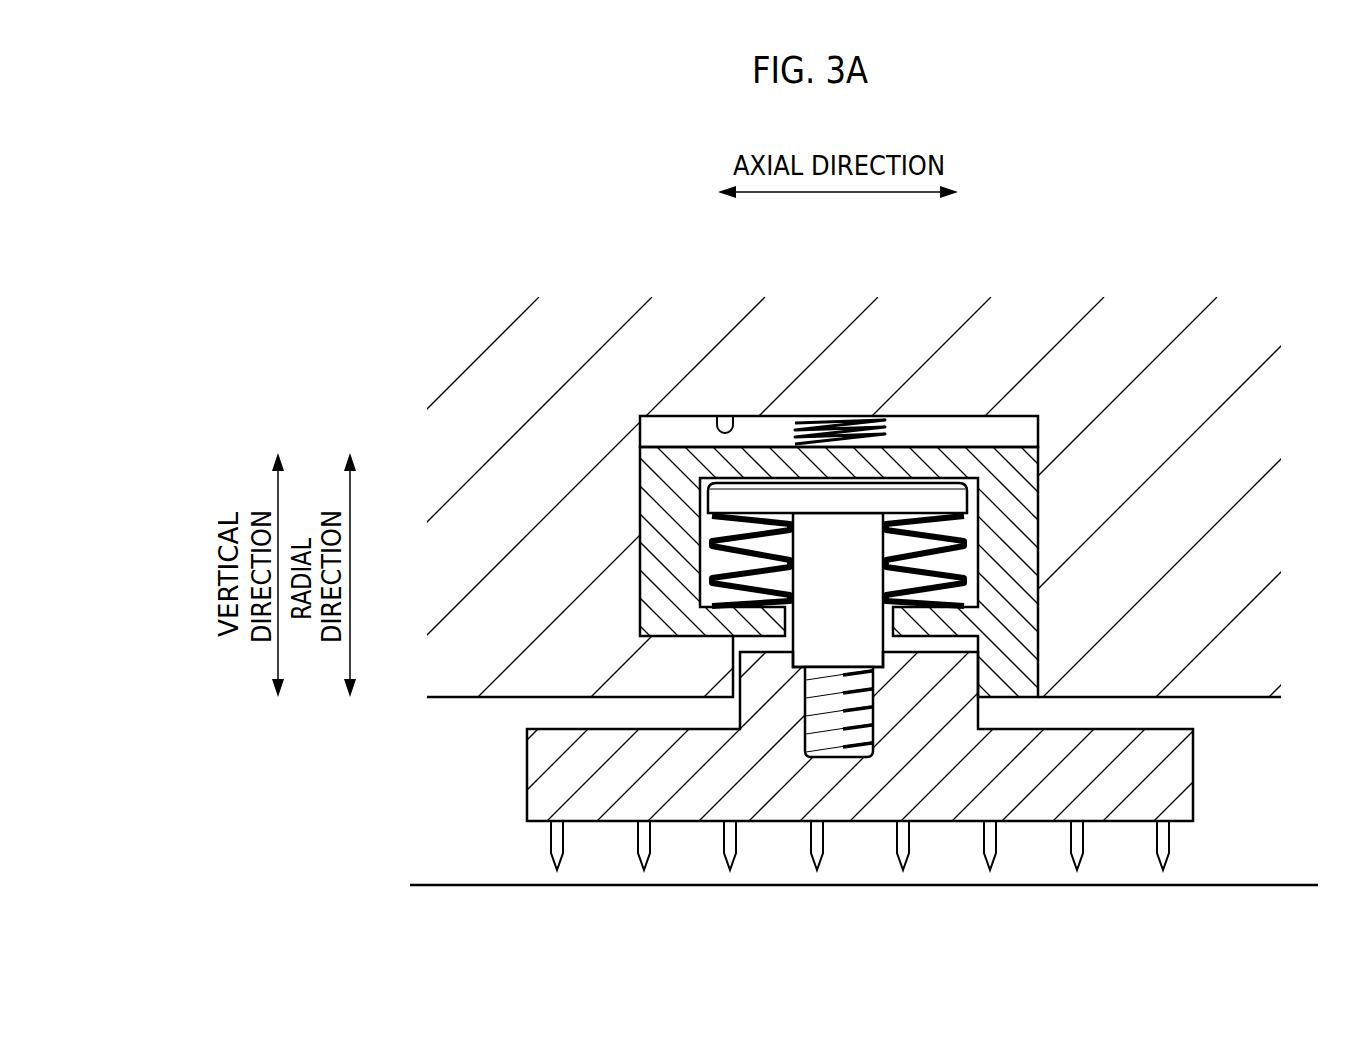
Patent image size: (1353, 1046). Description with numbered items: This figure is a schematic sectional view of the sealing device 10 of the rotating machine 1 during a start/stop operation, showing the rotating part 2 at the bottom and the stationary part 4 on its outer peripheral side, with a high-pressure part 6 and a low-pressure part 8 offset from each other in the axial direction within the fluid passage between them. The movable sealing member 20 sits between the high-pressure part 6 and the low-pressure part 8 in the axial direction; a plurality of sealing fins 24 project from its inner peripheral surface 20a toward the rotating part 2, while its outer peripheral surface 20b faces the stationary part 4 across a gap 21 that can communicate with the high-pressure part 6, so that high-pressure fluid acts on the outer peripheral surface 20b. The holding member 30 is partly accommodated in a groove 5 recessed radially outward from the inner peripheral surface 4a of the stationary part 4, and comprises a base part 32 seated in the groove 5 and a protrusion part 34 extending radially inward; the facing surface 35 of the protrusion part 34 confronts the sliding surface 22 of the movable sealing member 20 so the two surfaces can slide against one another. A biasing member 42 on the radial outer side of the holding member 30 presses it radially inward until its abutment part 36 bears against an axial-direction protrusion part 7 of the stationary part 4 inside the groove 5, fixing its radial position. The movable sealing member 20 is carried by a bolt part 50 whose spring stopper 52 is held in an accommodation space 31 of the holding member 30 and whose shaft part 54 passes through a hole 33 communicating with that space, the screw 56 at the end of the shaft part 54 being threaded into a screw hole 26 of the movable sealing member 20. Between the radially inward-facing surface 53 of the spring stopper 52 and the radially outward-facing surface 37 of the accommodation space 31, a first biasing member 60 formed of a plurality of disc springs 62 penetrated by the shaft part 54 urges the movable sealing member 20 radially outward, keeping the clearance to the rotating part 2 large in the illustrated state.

The rotating machine 1 is at (859, 526).
The rotating part 2 is at (470, 898).
The stationary part 4 is at (503, 409).
The inner peripheral surface 4a is at (1163, 698).
The groove 5 is at (733, 416).
The high-pressure part 6 is at (442, 775).
The axial-direction protrusion part 7 is at (697, 667).
The low-pressure part 8 is at (1320, 770).
The sealing device 10 is at (838, 579).
The movable sealing member 20 is at (859, 791).
The inner peripheral surface 20a is at (1180, 823).
The outer peripheral surface 20b is at (573, 729).
The gap 21 is at (603, 718).
The sliding surface 22 is at (985, 690).
The sealing fins 24 is at (557, 843).
The screw hole 26 is at (808, 728).
The holding member 30 is at (968, 443).
The accommodation space 31 is at (963, 525).
The base part 32 is at (1013, 492).
The hole 33 is at (790, 620).
The protrusion part 34 is at (1013, 672).
The facing surface 35 is at (995, 688).
The abutment part 36 is at (757, 623).
The surface 37 is at (702, 578).
The biasing member 42 is at (818, 416).
The bolt part 50 is at (868, 668).
The spring stopper 52 is at (722, 497).
The surface 53 is at (730, 530).
The shaft part 54 is at (947, 587).
The screw 56 is at (963, 643).
The first biasing member 60 is at (960, 558).
The disc springs 62 is at (950, 598).